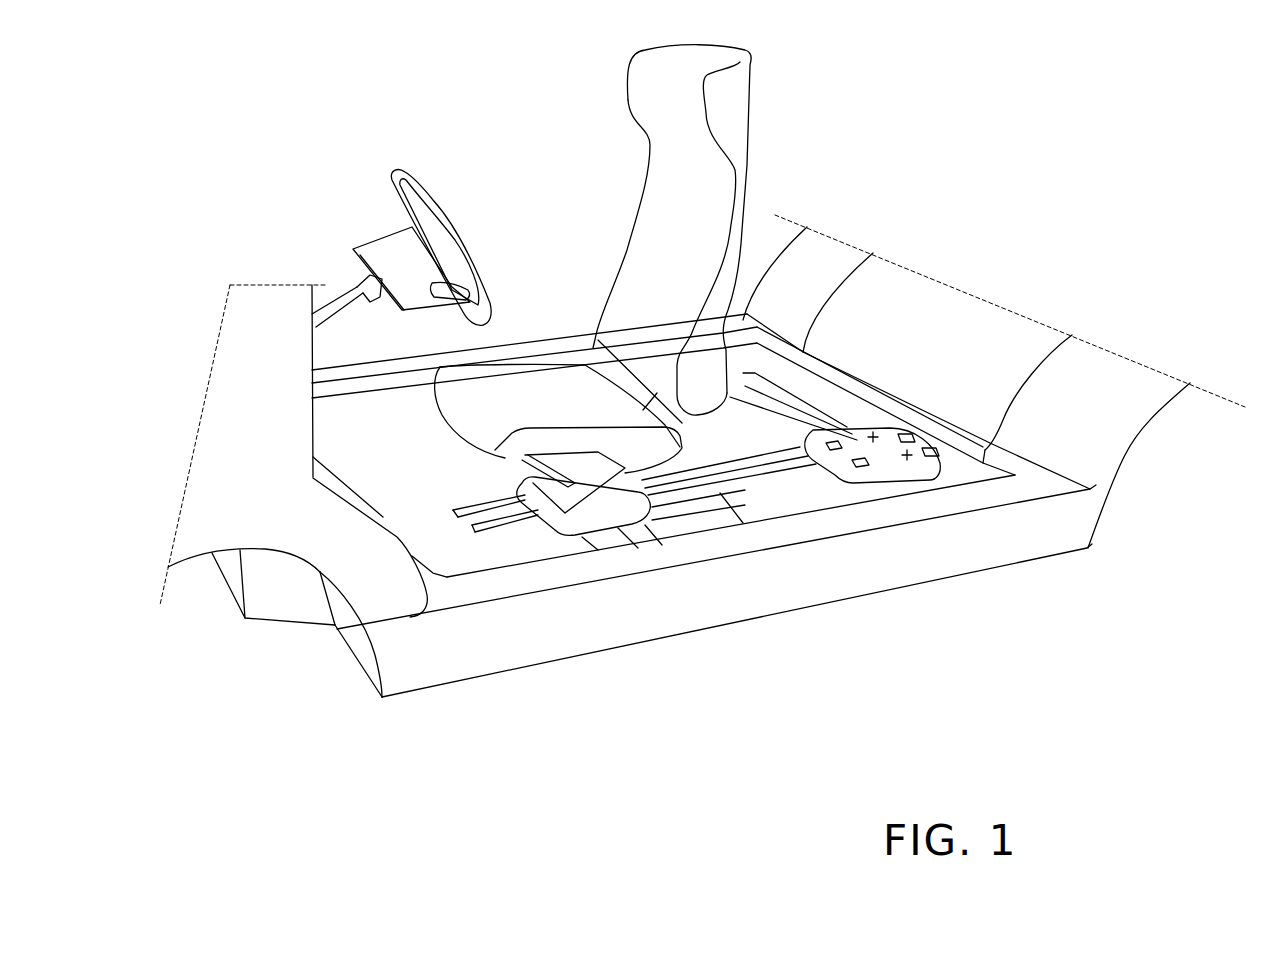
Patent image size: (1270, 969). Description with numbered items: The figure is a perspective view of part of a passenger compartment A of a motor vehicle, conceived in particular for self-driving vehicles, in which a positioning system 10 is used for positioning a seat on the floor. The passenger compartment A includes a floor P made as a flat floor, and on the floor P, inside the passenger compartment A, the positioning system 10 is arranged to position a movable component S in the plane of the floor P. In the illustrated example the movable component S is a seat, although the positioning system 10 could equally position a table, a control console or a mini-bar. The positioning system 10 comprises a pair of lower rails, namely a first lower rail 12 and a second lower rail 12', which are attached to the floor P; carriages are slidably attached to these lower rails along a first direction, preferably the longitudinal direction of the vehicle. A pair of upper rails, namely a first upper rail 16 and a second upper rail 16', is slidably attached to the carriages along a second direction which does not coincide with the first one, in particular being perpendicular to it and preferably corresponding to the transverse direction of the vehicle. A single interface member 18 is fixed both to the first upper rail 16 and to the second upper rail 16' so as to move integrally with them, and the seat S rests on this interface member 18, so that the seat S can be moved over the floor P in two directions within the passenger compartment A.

The passenger compartment A is at (558, 262).
The movable component S is at (725, 110).
The floor P is at (863, 410).
The positioning system 10 is at (553, 538).
The first lower rail 12 is at (599, 622).
The second lower rail 12' is at (617, 611).
The first upper rail 16 is at (765, 533).
The second upper rail 16' is at (812, 524).
The interface member 18 is at (530, 507).